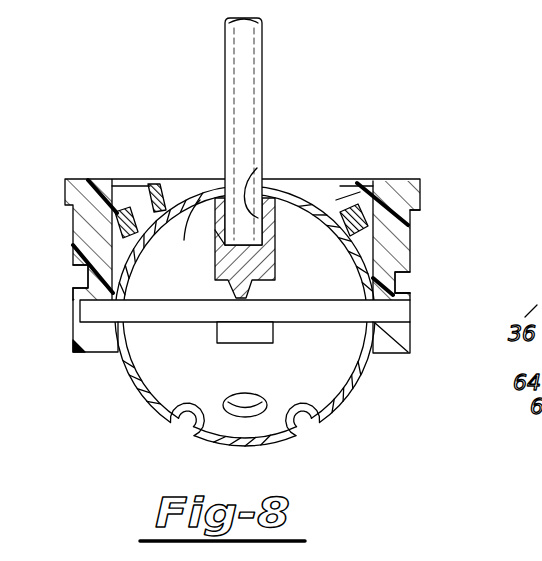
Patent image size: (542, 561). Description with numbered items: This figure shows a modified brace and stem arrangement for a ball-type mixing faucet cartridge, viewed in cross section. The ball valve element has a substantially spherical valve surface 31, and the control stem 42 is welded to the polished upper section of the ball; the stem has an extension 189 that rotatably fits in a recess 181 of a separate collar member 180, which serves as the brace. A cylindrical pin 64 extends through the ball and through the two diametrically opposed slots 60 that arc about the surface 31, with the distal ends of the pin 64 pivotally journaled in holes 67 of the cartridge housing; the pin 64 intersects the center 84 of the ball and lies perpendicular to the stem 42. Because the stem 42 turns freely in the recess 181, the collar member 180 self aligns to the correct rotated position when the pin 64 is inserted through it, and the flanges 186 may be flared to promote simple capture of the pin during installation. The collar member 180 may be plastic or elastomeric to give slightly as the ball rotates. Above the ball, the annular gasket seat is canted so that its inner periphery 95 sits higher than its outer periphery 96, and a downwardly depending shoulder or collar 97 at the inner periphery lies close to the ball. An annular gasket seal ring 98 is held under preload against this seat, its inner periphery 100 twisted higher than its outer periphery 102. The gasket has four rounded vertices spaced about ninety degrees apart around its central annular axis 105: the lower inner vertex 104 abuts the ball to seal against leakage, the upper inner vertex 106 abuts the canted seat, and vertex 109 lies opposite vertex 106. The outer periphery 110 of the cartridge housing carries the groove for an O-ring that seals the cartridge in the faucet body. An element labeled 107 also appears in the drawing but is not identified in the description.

The spherical valve surface 31 is at (143, 397).
The control stem 42 is at (253, 59).
The slots 60 is at (118, 350).
The pin 64 is at (163, 313).
The holes 67 is at (412, 306).
The center of ball valve 84 is at (244, 312).
The inner periphery of gasket seat 95 is at (150, 210).
The outer periphery of gasket seat 96 is at (110, 207).
The shoulder or collar 97 is at (160, 192).
The annular gasket seal ring 98 is at (425, 188).
The inner periphery of gasket seal ring 100 is at (352, 205).
The outer periphery of gasket seal ring 102 is at (413, 225).
The vertex 104 is at (221, 233).
The central annular axis 105 is at (120, 229).
The vertex 106 is at (365, 203).
The lower shoulder 107 is at (412, 268).
The vertex 109 is at (105, 250).
The outer periphery of cartridge housing 110 is at (78, 272).
The collar member 180 is at (223, 248).
The recess 181 is at (252, 178).
The flanges 186 is at (272, 337).
The extension 189 is at (270, 240).